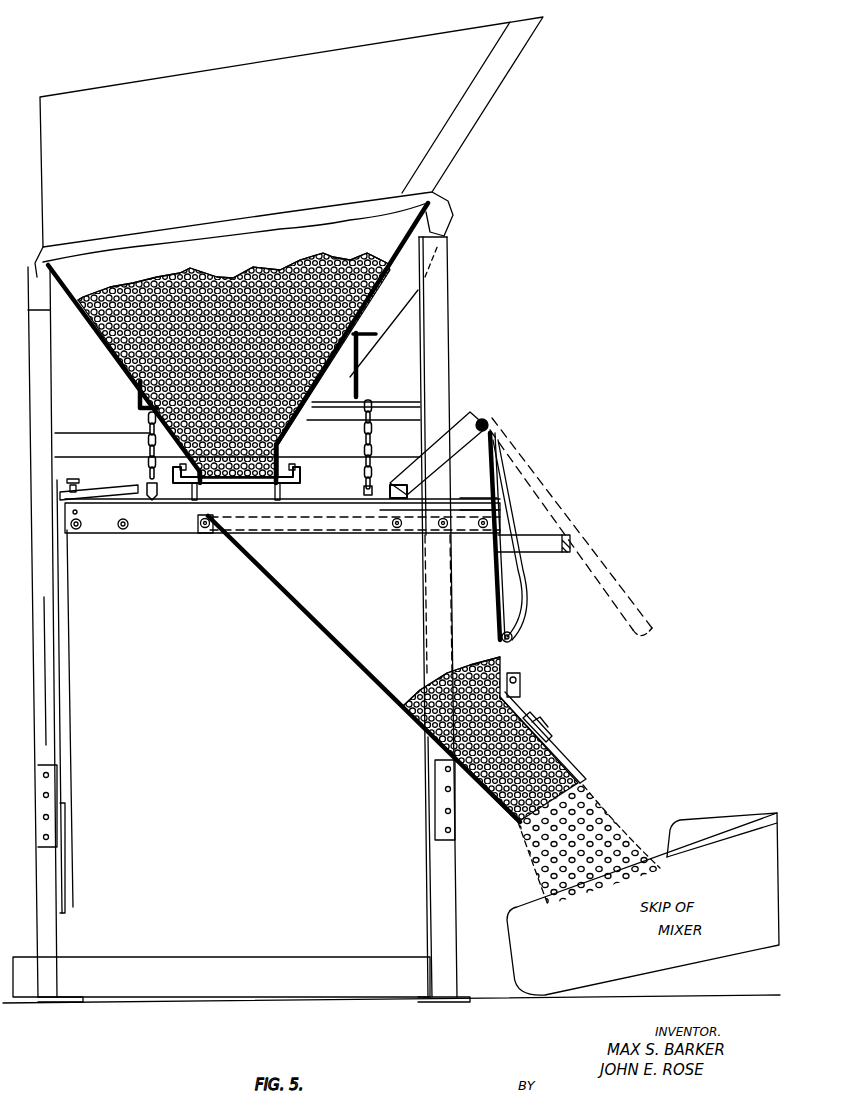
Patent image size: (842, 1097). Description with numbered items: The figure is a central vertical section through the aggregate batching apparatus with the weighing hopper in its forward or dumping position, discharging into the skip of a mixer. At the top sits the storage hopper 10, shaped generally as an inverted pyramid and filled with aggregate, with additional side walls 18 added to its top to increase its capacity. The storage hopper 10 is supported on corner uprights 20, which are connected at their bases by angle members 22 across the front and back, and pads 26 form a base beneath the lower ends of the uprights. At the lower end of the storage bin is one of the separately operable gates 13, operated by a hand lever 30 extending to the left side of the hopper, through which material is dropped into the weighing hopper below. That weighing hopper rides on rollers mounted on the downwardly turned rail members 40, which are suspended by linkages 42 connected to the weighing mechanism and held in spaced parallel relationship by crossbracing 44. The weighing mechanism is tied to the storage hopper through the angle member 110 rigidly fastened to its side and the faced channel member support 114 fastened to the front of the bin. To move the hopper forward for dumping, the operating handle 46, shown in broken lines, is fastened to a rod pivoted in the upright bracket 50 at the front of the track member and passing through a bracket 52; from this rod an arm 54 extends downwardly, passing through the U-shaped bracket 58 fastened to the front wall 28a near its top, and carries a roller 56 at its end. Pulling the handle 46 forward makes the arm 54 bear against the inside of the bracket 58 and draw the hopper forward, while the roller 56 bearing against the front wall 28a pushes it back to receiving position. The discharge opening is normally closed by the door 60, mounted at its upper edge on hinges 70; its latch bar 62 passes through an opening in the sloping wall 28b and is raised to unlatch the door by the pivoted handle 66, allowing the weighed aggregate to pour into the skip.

The storage hopper 10 is at (120, 356).
The gates 13 is at (243, 478).
The additional side walls 18 is at (433, 120).
The corner uprights 20 is at (33, 578).
The angle members 22 is at (318, 950).
The pads 26 is at (55, 1002).
The front wall 28a is at (502, 582).
The sloping wall 28b is at (298, 600).
The hand lever 30 is at (284, 492).
The rail members 40 is at (103, 530).
The linkages 42 is at (148, 447).
The crossbracing 44 is at (125, 498).
The operating handle 46 is at (620, 585).
The upright bracket 50 is at (477, 473).
The bracket 52 is at (477, 419).
The arm 54 is at (528, 608).
The roller 56 is at (510, 645).
The U-shaped bracket 58 is at (572, 545).
The door 60 is at (557, 752).
The latch bar 62 is at (563, 777).
The pivoted handle 66 is at (548, 735).
The hinges 70 is at (522, 698).
The angle member 110 is at (138, 393).
The channel member support 114 is at (362, 365).